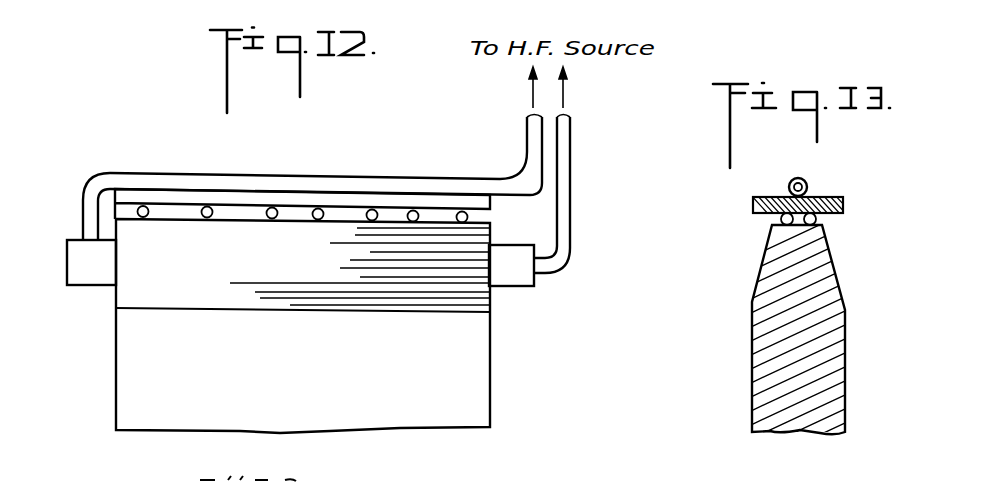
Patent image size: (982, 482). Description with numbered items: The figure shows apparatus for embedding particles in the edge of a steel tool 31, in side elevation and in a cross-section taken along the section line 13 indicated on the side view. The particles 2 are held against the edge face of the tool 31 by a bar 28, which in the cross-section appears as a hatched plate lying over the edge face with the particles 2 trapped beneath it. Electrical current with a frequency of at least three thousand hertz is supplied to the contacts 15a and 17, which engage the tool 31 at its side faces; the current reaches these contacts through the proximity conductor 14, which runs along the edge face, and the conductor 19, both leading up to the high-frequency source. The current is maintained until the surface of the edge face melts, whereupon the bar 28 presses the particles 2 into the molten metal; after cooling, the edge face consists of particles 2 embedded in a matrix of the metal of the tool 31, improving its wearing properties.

In FIG. 12, the particles 2 is at (320, 214).
In FIG. 13, the particles 2 is at (779, 222).
In FIG. 12, the section line 13— 13 is at (270, 145).
In FIG. 12, the proximity conductor 14 is at (318, 183).
In FIG. 13, the proximity conductor 14 is at (797, 178).
In FIG. 12, the contact 15a is at (93, 275).
In FIG. 12, the contact 17 is at (535, 285).
In FIG. 12, the conductor 19 is at (568, 166).
In FIG. 13, the bar 28 is at (753, 204).
In FIG. 12, the steel tool 31 is at (480, 372).
In FIG. 13, the steel tool 31 is at (830, 355).